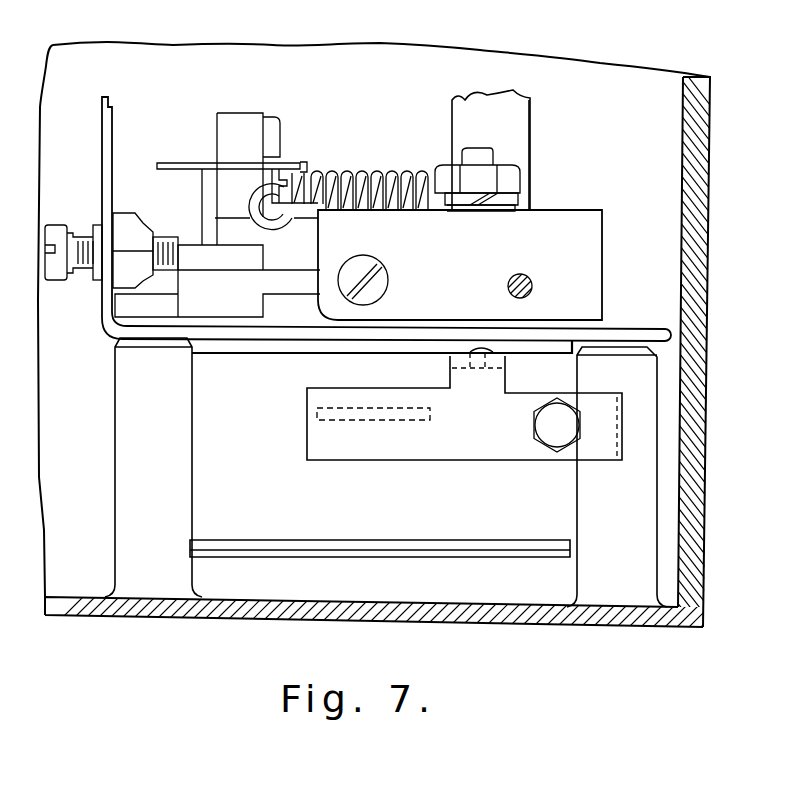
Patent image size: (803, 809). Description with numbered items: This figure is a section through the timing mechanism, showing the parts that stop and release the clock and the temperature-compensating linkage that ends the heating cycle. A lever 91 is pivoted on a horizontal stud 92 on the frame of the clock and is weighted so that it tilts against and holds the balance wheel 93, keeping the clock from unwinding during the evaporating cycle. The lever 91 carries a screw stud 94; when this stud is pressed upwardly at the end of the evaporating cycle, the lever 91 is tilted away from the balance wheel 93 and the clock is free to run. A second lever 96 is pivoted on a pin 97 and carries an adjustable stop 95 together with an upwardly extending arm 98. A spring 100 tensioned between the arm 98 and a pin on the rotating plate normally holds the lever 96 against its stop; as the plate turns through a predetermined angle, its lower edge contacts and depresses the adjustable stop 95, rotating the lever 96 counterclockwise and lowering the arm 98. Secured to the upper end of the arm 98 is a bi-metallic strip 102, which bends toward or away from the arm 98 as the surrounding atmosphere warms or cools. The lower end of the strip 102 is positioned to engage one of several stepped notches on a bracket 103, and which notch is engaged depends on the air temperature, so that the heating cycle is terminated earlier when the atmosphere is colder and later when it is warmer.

The lever 91 is at (432, 447).
The horizontal stud 92 is at (487, 347).
The balance wheel 93 is at (330, 415).
The screw stud 94 is at (556, 438).
The adjustable stop 95 is at (388, 280).
The lever 96 is at (560, 222).
The pin 97 is at (480, 158).
The upwardly extending arm 98 is at (282, 130).
The spring 100 is at (362, 172).
The bi-metallic strip 102 is at (235, 120).
The bracket 103 is at (168, 163).